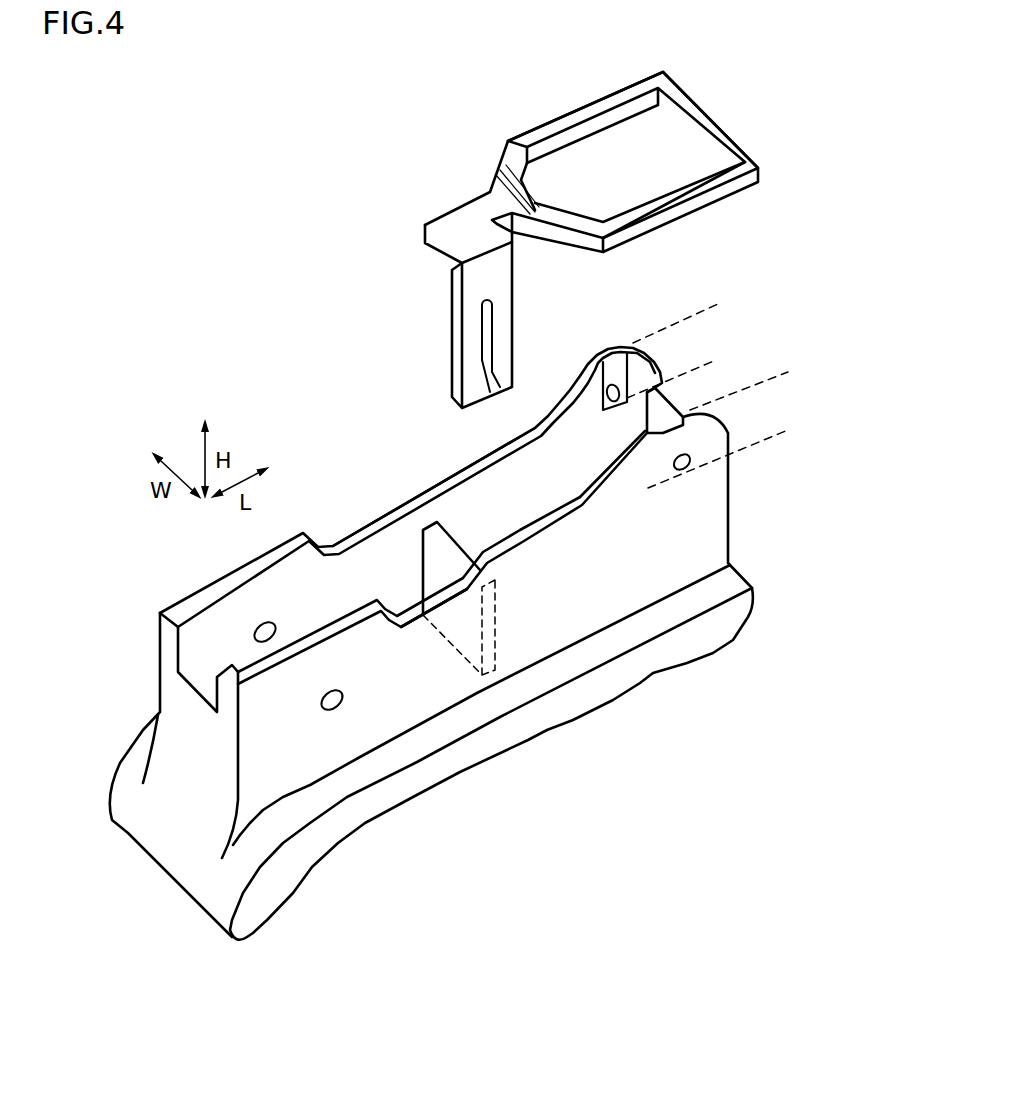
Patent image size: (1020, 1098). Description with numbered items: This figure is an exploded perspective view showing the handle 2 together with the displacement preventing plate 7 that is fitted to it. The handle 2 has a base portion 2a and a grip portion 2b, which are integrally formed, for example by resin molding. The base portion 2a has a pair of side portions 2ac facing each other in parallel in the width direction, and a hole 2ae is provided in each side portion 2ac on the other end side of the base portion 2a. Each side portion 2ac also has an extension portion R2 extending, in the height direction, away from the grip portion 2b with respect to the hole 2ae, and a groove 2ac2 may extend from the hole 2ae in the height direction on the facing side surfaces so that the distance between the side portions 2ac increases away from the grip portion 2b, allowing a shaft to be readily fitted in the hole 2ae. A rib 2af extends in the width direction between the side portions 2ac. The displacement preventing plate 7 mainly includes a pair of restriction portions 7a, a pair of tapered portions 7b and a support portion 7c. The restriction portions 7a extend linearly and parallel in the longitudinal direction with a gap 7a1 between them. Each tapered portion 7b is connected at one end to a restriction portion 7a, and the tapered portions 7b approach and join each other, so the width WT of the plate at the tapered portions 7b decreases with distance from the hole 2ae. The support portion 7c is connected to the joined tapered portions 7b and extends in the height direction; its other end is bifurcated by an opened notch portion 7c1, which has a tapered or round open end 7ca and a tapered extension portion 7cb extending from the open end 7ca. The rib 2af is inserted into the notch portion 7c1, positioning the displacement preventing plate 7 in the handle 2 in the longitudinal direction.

The handle 2 is at (470, 613).
The base portion 2a is at (390, 705).
The grip portion 2b is at (453, 763).
The side portions 2ac is at (550, 523).
The groove 2ac2 is at (623, 372).
The hole 2ae is at (692, 458).
The rib 2af is at (430, 575).
The displacement preventing plate 7 is at (707, 122).
The restriction portions 7a is at (705, 200).
The gap 7a1 is at (605, 155).
The tapered portions 7b is at (568, 223).
The support portion 7c is at (477, 287).
The notch portion 7c1 is at (418, 349).
The extension portion 7cb is at (482, 340).
The open end 7ca is at (482, 393).
The width WT is at (520, 195).
The extension portion R2 is at (718, 305).